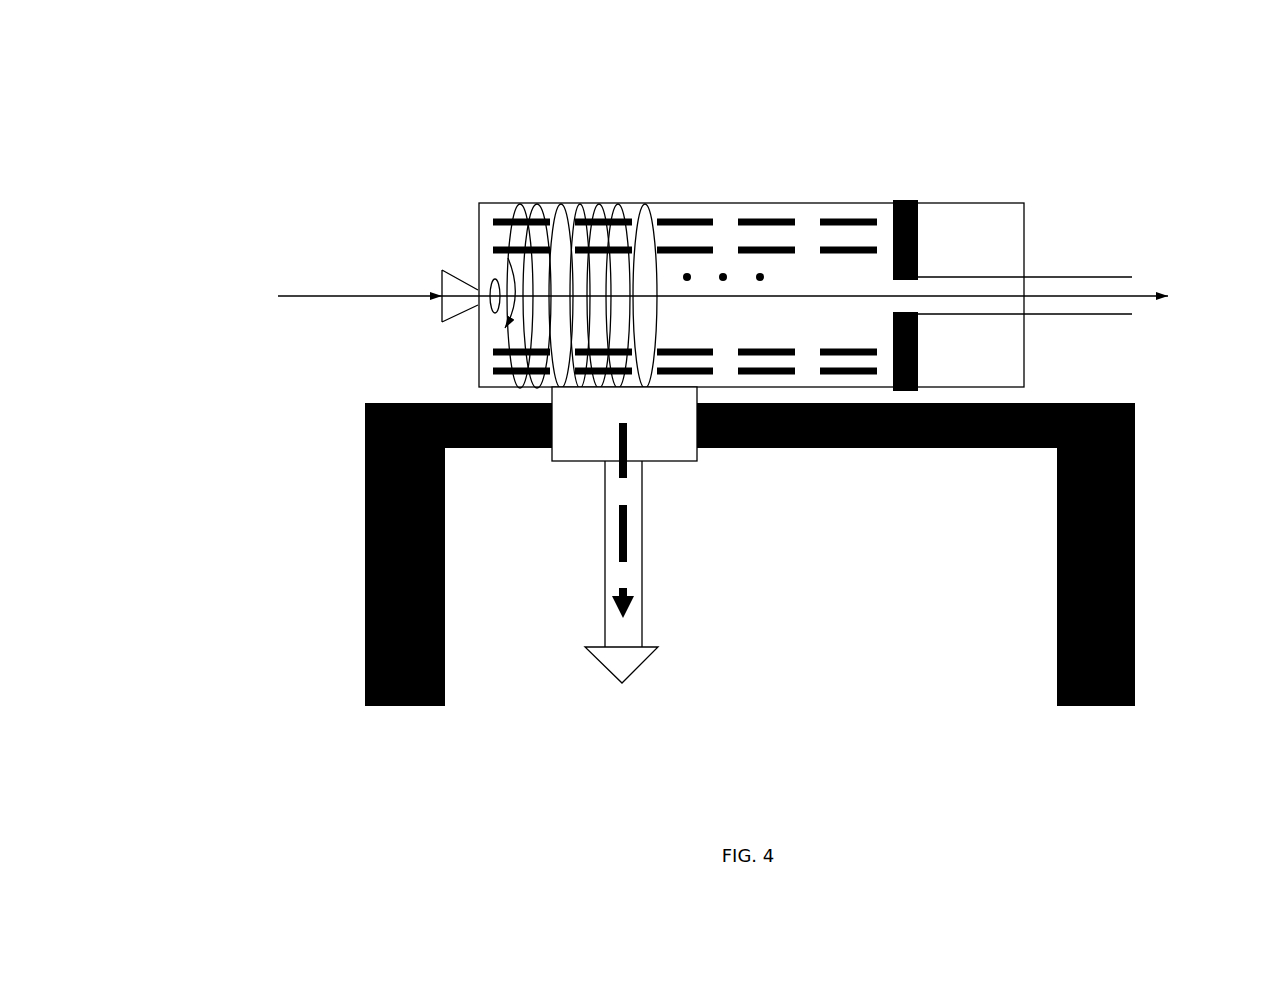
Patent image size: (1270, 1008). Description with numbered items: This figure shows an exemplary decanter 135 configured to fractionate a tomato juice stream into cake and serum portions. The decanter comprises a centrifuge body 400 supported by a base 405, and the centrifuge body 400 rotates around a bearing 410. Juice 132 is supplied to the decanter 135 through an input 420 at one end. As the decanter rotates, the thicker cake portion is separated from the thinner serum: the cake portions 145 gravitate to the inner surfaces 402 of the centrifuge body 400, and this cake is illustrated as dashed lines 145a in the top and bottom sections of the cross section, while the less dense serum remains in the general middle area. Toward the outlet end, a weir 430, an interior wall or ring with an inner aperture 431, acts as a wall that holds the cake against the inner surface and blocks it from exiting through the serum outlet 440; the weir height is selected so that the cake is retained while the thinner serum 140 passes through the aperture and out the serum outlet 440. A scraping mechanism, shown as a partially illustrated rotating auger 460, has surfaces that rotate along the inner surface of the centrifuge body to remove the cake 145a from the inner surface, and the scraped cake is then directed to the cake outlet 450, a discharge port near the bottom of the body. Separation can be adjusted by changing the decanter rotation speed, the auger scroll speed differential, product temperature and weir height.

The juice 132 is at (360, 270).
The decanter 135 is at (263, 353).
The serum 140 is at (845, 301).
The cake portions 145 is at (621, 588).
The cake 145a is at (783, 487).
The centrifuge body 400 is at (477, 352).
The inner surfaces 402 is at (867, 485).
The base 405 is at (1057, 562).
The bearing 410 is at (478, 203).
The input 420 is at (442, 270).
The weir 430 is at (1059, 354).
The inner aperture 431 is at (893, 294).
The serum outlet 440 is at (1053, 277).
The cake outlet 450 is at (667, 445).
The rotating auger 460 is at (583, 206).